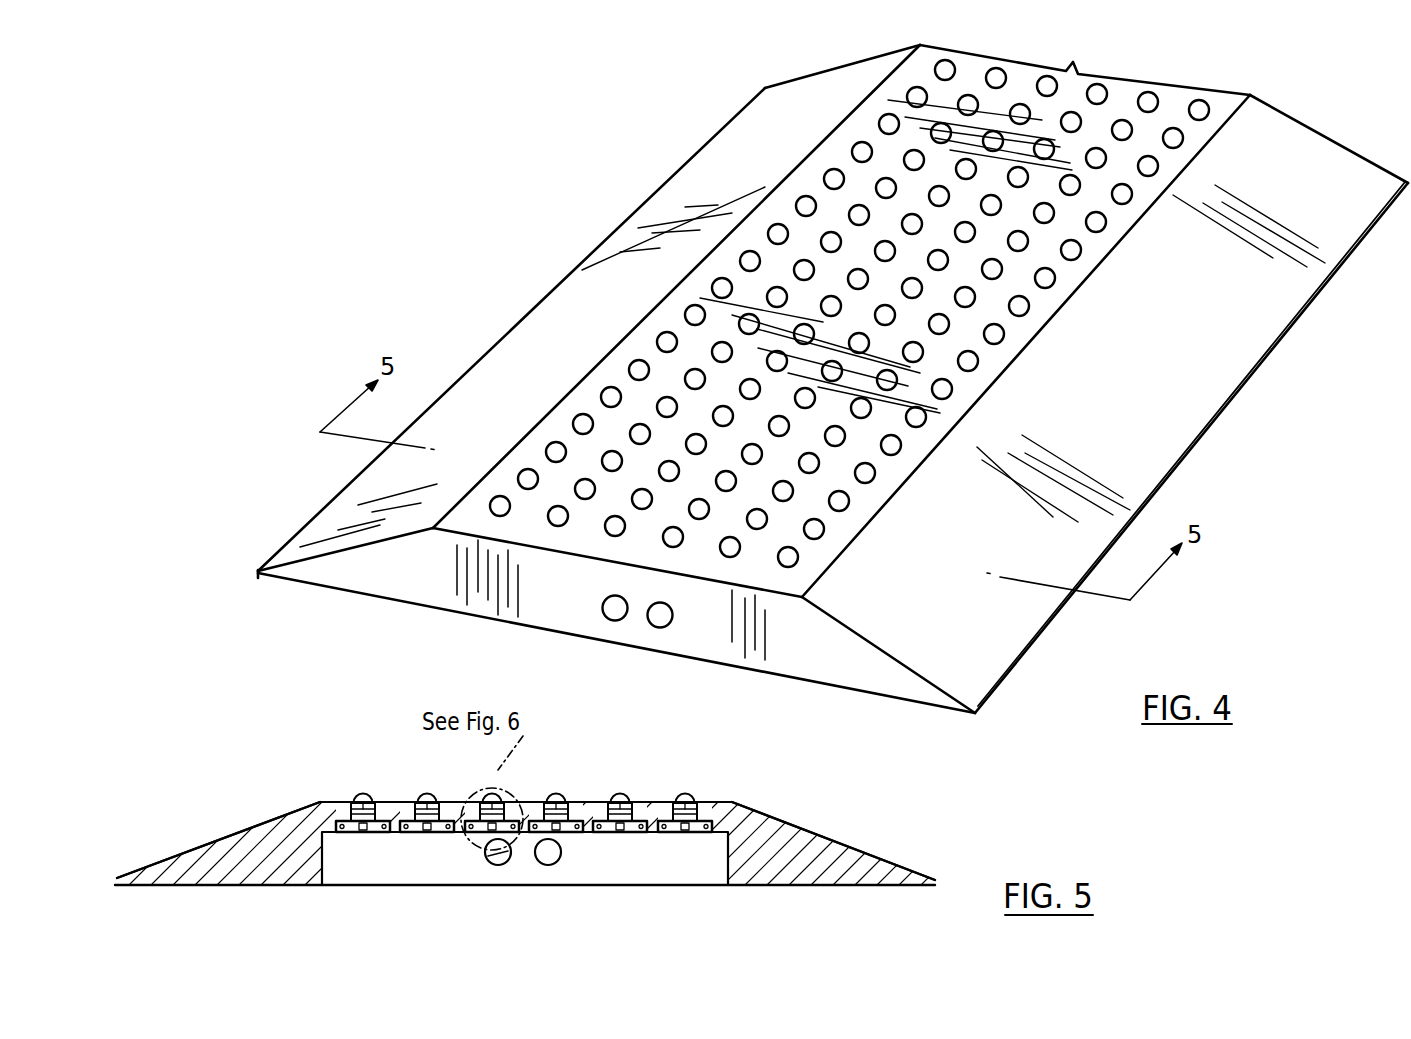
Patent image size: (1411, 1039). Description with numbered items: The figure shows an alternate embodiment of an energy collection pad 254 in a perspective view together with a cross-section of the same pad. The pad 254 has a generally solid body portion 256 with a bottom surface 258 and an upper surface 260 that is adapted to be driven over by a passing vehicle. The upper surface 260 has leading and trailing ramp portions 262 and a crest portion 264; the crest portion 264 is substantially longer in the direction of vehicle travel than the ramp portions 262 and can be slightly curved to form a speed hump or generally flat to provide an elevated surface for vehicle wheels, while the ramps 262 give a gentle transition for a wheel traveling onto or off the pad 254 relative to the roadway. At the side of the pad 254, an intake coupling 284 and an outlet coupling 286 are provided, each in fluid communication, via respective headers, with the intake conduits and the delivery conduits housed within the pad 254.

In FIG. 4, the energy collection pad 254 is at (525, 173).
In FIG. 5, the energy collection pad 254 is at (245, 763).
In FIG. 4, the body portion 256 is at (833, 661).
In FIG. 5, the body portion 256 is at (790, 853).
In FIG. 5, the bottom surface 258 is at (217, 888).
In FIG. 5, the upper surface 260 is at (335, 800).
In FIG. 4, the ramp portions 262 is at (532, 340).
In FIG. 5, the ramp portions 262 is at (214, 838).
In FIG. 5, the crest portion 264 is at (656, 802).
In FIG. 4, the intake coupling 284 is at (606, 615).
In FIG. 4, the outlet coupling 286 is at (663, 628).